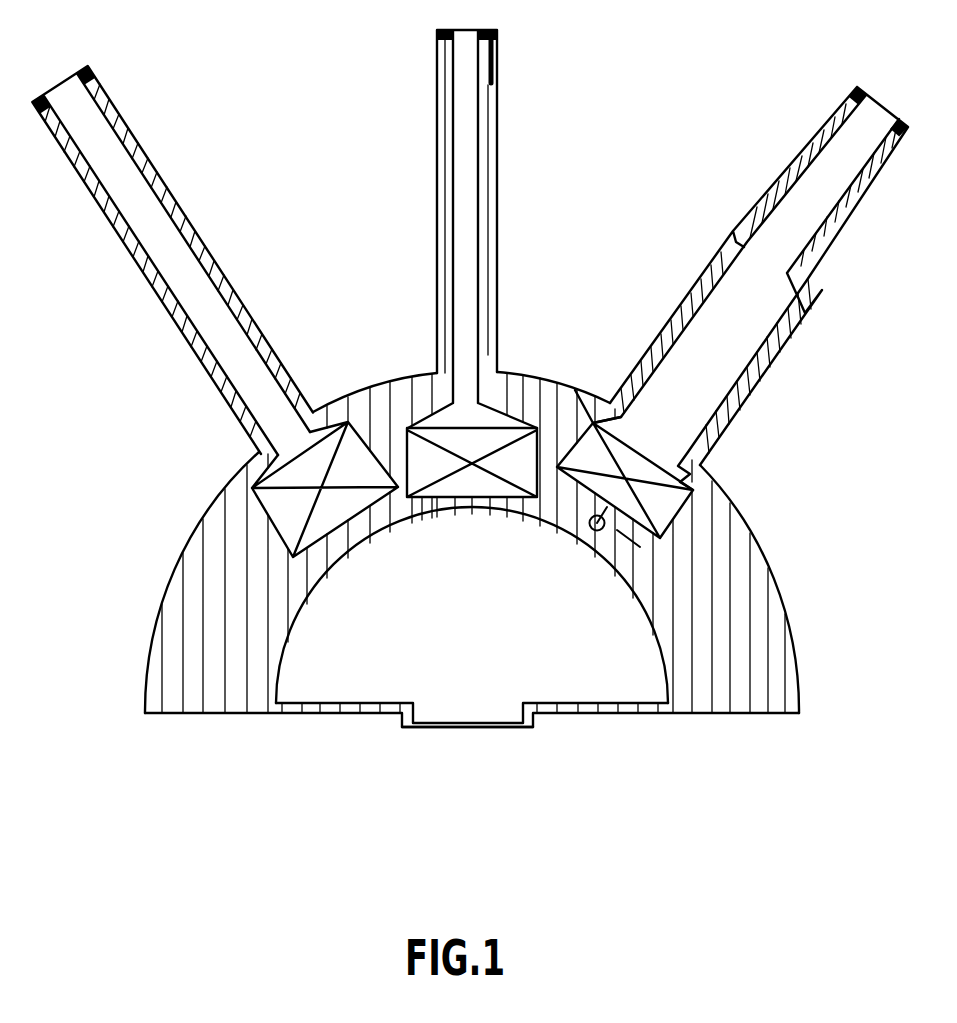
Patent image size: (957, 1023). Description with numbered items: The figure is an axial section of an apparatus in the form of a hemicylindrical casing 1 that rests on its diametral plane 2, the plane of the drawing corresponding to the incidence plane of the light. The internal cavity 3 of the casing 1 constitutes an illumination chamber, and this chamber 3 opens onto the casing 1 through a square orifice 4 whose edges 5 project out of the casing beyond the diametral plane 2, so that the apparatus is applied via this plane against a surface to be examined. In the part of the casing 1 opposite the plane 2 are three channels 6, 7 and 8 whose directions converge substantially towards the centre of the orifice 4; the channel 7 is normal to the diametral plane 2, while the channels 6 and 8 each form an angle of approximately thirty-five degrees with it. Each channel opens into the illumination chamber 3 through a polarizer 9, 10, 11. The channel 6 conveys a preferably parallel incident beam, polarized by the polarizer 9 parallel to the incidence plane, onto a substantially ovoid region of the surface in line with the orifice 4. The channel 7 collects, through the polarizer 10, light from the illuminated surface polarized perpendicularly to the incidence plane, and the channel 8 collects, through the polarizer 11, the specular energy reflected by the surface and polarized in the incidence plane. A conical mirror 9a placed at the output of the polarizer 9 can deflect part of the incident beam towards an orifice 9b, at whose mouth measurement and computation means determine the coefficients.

The hemicylindrical casing 1 is at (740, 638).
The diametral plane 2 is at (702, 715).
The internal cavity 3 is at (376, 643).
The square orifice 4 is at (512, 733).
The edges 5 is at (400, 717).
The channel 6 is at (738, 327).
The channel 7 is at (462, 273).
The channel 8 is at (225, 342).
The polarizer 9 is at (658, 505).
The conical mirror 9a is at (640, 546).
The orifice 9b is at (638, 455).
The polarizer 10 is at (500, 460).
The polarizer 11 is at (313, 475).